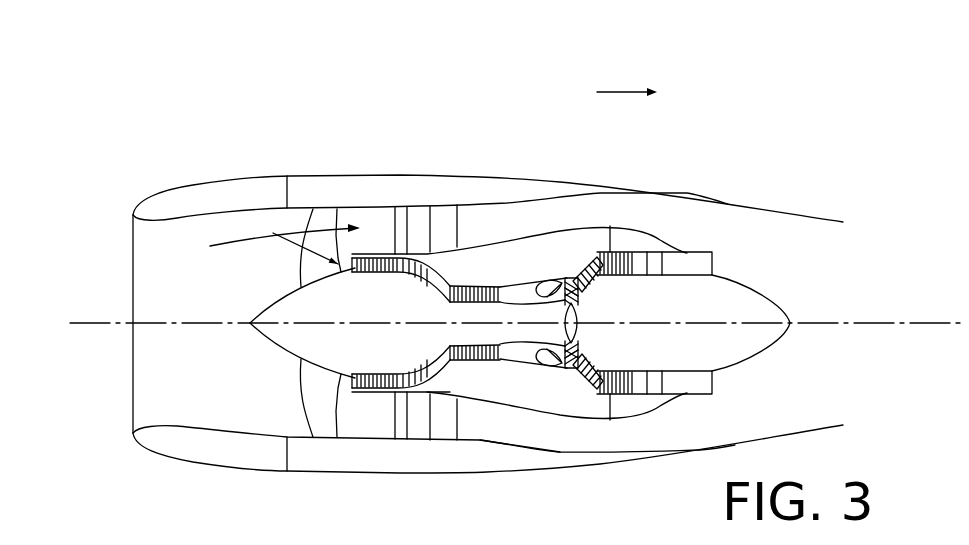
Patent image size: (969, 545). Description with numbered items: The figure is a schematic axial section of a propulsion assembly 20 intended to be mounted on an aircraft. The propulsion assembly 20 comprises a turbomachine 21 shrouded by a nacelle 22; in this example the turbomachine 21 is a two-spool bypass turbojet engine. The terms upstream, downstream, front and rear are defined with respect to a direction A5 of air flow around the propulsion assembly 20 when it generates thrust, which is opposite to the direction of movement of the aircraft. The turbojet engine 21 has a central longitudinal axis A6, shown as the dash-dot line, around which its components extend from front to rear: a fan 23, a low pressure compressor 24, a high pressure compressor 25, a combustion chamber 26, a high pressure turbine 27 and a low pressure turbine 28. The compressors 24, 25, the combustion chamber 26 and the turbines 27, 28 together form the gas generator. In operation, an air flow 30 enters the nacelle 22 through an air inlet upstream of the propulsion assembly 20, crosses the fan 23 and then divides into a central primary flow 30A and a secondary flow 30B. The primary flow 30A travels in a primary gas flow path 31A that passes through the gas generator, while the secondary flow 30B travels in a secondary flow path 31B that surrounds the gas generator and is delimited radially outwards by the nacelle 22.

The propulsion assembly 20 is at (290, 133).
The turbomachine 21 is at (737, 257).
The nacelle 22 is at (403, 207).
The fan 23 is at (300, 391).
The low pressure compressor 24 is at (383, 252).
The high pressure compressor 25 is at (488, 287).
The combustion chamber 26 is at (546, 278).
The high pressure turbine 27 is at (593, 258).
The low pressure turbine 28 is at (638, 251).
The air flow 30 is at (233, 240).
The primary flow 30A is at (332, 245).
The secondary flow 30B is at (312, 212).
The primary gas flow path 31A is at (443, 358).
The secondary flow path 31B is at (555, 435).
The direction of air flow A5 is at (630, 92).
The central longitudinal axis A6 is at (78, 323).